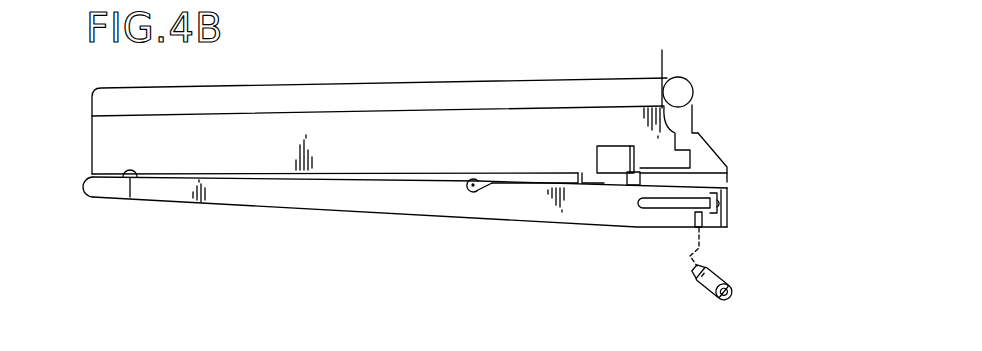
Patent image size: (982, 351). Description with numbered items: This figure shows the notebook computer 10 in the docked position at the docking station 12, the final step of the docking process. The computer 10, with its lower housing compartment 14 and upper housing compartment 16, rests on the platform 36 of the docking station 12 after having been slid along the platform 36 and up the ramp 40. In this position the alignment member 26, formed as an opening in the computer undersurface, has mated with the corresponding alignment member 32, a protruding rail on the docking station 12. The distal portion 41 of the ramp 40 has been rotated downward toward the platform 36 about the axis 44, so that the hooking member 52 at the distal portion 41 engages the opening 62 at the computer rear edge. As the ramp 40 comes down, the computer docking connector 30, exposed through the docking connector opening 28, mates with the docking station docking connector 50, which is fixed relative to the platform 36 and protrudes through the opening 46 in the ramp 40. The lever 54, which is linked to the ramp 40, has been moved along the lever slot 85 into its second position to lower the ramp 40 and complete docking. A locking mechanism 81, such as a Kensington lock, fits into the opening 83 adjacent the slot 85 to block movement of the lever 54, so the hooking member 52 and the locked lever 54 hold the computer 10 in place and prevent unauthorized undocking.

The notebook computer 10 is at (371, 83).
The docking station 12 is at (525, 222).
The lower housing compartment 14 is at (414, 149).
The upper housing compartment 16 is at (421, 104).
The alignment member 26 is at (138, 170).
The docking connector opening 28 is at (597, 146).
The docking connector 30 is at (622, 146).
The alignment member 32 is at (130, 197).
The platform 36 is at (254, 196).
The ramp 40 is at (730, 179).
The distal portion of the ramp 41 is at (740, 139).
The axis 44 is at (470, 194).
The opening 46 is at (633, 186).
The docking connector 50 is at (608, 180).
The hooking member 52 is at (700, 136).
The lever 54 is at (730, 190).
The opening 62 is at (676, 66).
The locking mechanism 81 is at (693, 284).
The opening 83 is at (728, 227).
The lever slot 85 is at (642, 210).